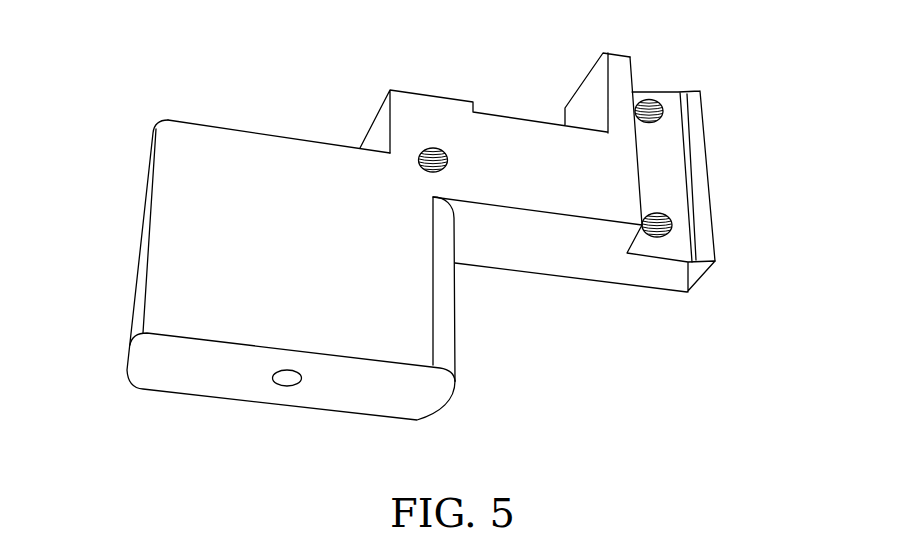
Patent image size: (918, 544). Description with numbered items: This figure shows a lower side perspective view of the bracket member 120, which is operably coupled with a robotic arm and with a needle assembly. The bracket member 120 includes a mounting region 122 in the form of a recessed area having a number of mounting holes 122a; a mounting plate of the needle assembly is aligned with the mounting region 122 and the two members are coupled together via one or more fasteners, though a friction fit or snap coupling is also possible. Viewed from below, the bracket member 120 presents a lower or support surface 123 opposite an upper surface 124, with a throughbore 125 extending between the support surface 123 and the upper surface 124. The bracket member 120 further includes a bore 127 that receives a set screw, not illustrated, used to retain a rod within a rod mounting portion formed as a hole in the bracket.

The mounting block 120 is at (143, 238).
The flange 122 is at (682, 102).
The threaded holes 122a is at (650, 100).
The front face 123 is at (226, 397).
The top surface 124 is at (271, 119).
The hole 125 is at (287, 386).
The threaded hole 127 is at (429, 148).